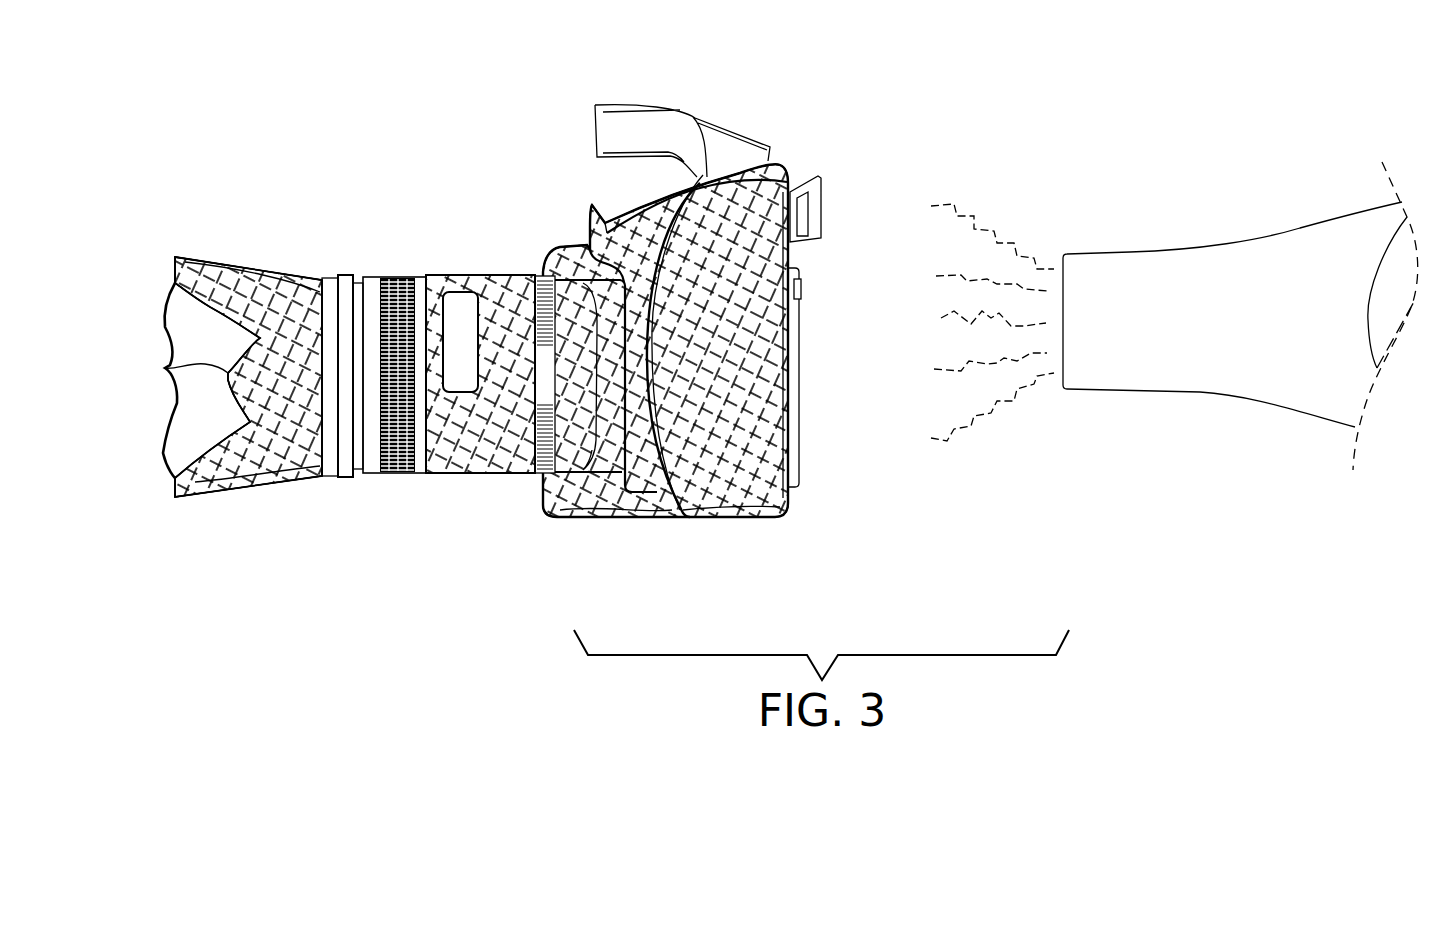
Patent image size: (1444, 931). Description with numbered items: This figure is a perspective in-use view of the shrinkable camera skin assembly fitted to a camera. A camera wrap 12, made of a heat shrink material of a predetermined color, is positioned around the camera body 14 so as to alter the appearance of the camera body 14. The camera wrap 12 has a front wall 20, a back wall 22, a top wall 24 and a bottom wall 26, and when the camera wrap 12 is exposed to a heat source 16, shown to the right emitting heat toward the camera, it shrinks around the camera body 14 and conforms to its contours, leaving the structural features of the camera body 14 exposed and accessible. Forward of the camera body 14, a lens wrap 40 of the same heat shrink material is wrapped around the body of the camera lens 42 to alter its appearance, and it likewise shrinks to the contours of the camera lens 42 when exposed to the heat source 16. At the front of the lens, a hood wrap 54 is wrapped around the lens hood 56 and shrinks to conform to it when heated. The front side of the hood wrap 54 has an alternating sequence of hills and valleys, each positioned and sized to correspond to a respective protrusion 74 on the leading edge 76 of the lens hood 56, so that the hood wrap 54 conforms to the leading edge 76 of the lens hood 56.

The camera wrap 12 is at (778, 522).
The camera body 14 is at (753, 143).
The heat source 16 is at (1167, 278).
The front wall 20 is at (545, 494).
The back wall 22 is at (803, 283).
The top wall 24 is at (705, 142).
The bottom wall 26 is at (688, 516).
The lens wrap 40 is at (508, 276).
The camera lens 42 is at (418, 476).
The hood wrap 54 is at (270, 300).
The lens hood 56 is at (325, 288).
The protrusion 74 is at (165, 368).
The leading edge 76 is at (175, 257).